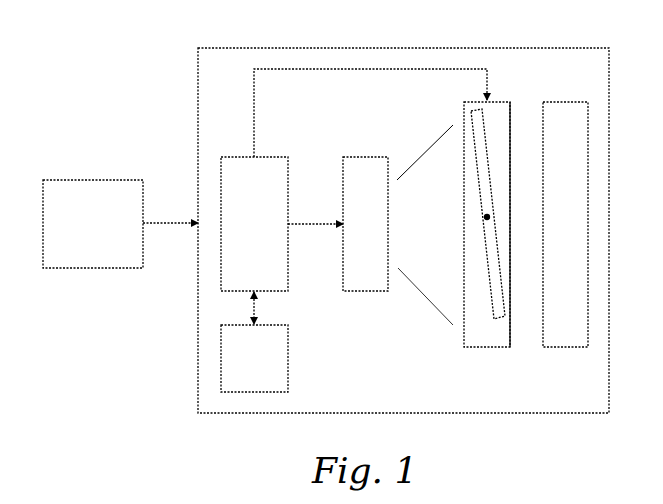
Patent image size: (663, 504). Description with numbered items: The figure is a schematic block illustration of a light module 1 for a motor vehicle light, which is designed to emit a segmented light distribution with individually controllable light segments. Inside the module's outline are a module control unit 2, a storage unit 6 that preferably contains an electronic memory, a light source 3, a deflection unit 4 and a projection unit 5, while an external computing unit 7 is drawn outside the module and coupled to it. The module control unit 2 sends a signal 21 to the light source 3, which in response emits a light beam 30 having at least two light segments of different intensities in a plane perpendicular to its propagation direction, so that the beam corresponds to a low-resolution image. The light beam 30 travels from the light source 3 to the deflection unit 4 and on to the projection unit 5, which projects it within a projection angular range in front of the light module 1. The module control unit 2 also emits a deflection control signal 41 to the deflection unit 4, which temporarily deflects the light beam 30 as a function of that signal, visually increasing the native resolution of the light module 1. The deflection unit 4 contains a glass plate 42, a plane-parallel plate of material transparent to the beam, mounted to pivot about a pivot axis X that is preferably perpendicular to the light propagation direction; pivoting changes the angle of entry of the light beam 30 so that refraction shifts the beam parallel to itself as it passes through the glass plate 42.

The light module 1 is at (219, 72).
The module control unit 2 is at (254, 224).
The light source 3 is at (365, 224).
The deflection unit 4 is at (487, 225).
The projection unit 5 is at (565, 225).
The storage unit 6 is at (254, 358).
The external computing unit 7 is at (93, 224).
The control signal 21 is at (315, 217).
The light beam 30 is at (425, 225).
The deflection control signal 41 is at (383, 113).
The glass plate 42 is at (480, 140).
The pivot axis X is at (489, 217).